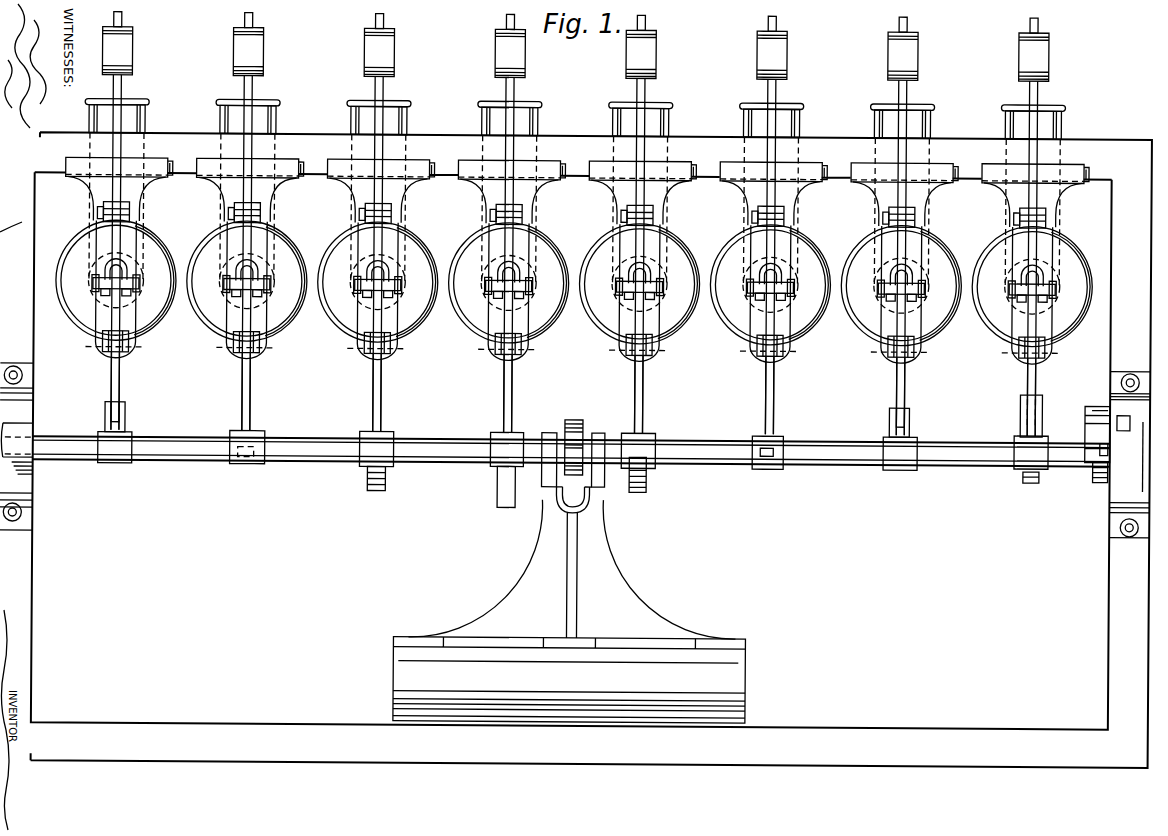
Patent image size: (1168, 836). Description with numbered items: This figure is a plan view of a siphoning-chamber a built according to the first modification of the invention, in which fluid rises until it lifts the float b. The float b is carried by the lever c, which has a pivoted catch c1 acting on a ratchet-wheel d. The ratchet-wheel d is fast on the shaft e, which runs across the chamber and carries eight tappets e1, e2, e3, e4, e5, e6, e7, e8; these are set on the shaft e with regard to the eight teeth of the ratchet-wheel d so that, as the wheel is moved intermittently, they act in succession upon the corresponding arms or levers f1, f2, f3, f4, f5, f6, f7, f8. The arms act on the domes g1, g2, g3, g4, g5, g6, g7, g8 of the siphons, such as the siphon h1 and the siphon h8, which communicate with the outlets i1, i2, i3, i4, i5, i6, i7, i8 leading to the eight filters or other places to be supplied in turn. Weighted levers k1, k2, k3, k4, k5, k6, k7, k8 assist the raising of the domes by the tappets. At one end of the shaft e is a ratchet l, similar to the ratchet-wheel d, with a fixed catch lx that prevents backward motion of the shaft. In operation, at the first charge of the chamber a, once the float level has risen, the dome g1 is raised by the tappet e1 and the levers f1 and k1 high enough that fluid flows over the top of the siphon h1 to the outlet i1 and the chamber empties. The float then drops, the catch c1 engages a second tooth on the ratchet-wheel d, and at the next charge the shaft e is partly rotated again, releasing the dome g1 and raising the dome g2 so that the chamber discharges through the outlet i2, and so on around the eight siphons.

The siphoning-chamber a is at (33, 588).
The float b is at (569, 680).
The lever c is at (578, 566).
The pivoted catch c1 is at (586, 493).
The ratchet-wheel d is at (575, 433).
The shaft e is at (186, 452).
The tappet e1 is at (1041, 439).
The tappet e2 is at (912, 437).
The tappet e3 is at (768, 466).
The tappet e4 is at (651, 462).
The tappet e5 is at (497, 469).
The tappet e6 is at (388, 461).
The tappet e7 is at (243, 459).
The tappet e8 is at (127, 431).
The arm or lever f1 is at (1031, 331).
The arm or lever f2 is at (903, 330).
The arm or lever f3 is at (772, 329).
The arm or lever f4 is at (638, 328).
The arm or lever f5 is at (511, 327).
The arm or lever f6 is at (380, 326).
The arm or lever f7 is at (249, 325).
The arm or lever f8 is at (118, 325).
The dome g1 is at (1032, 286).
The dome g2 is at (901, 285).
The dome g3 is at (770, 284).
The dome g4 is at (639, 283).
The dome g5 is at (508, 283).
The dome g6 is at (377, 282).
The dome g7 is at (246, 281).
The dome g8 is at (116, 280).
The siphon h1 is at (1048, 217).
The siphon h8 is at (133, 210).
The outlet i1 is at (1042, 122).
The outlet i2 is at (913, 121).
The outlet i3 is at (782, 120).
The outlet i4 is at (652, 119).
The outlet i5 is at (521, 118).
The outlet i6 is at (390, 117).
The outlet i7 is at (259, 116).
The outlet i8 is at (128, 116).
The weighted lever k1 is at (1041, 227).
The weighted lever k2 is at (912, 226).
The weighted lever k3 is at (781, 225).
The weighted lever k4 is at (650, 224).
The weighted lever k5 is at (520, 223).
The weighted lever k6 is at (389, 222).
The weighted lever k7 is at (258, 222).
The weighted lever k8 is at (127, 221).
The ratchet l is at (1097, 479).
The fixed catch lx is at (1090, 440).